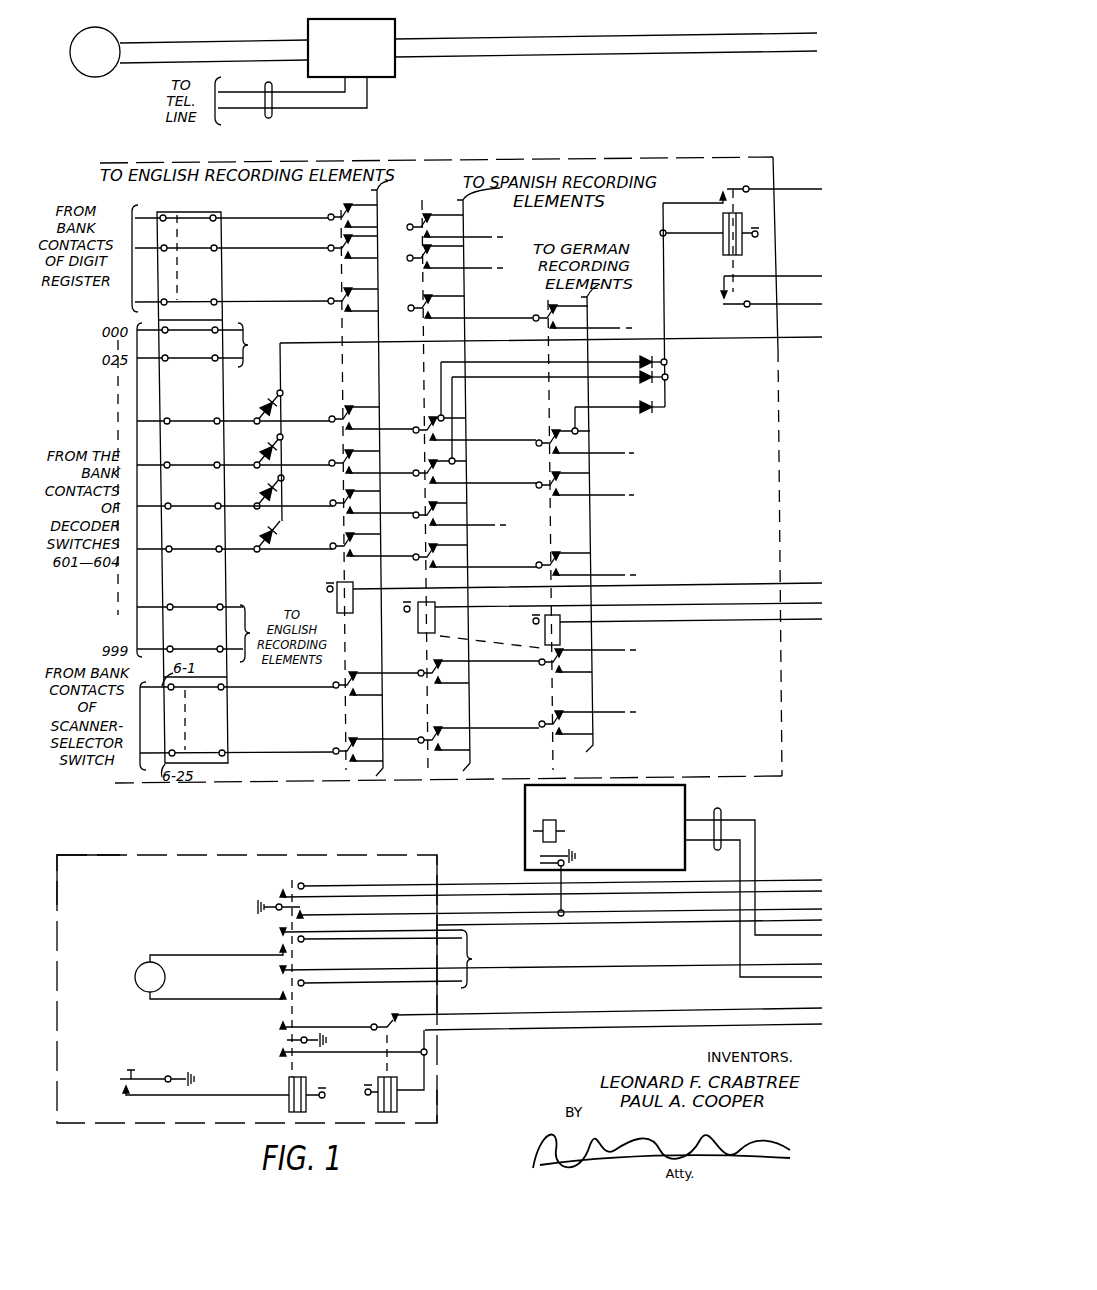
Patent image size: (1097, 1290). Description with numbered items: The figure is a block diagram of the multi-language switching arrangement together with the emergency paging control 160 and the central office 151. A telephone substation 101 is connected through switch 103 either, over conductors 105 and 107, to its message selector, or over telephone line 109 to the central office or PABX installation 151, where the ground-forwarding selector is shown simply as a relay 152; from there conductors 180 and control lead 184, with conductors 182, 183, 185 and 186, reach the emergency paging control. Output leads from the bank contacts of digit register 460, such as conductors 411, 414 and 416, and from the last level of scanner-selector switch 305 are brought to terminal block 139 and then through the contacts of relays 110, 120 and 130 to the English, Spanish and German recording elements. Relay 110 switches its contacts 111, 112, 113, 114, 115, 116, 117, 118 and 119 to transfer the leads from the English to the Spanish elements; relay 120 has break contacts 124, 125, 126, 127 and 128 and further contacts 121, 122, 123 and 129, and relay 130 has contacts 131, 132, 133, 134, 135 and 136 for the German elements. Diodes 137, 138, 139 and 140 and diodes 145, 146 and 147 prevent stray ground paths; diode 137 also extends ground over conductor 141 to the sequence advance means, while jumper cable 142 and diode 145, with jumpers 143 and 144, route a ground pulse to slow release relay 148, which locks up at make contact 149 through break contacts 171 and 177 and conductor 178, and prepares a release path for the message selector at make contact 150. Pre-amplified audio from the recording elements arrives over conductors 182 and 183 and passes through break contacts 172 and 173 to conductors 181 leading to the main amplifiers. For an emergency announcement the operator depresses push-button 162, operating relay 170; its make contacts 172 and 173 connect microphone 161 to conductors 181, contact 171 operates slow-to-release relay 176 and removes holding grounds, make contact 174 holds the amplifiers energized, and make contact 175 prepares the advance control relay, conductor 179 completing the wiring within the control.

The telephone substation 101 is at (77, 74).
The switch 103 is at (397, 70).
The conductor 105 is at (482, 35).
The conductor 107 is at (470, 56).
The telephone line 109 is at (272, 112).
The relay 110 is at (338, 578).
The contact 111 is at (347, 542).
The contact 112 is at (347, 499).
The contact 113 is at (346, 459).
The make contact 114 is at (346, 414).
The break contact 115 is at (345, 297).
The break contact 116 is at (345, 244).
The break contact 117 is at (345, 213).
The break contact 118 is at (350, 681).
The contact 119 is at (350, 747).
The relay 120 is at (418, 634).
The relay contact 121 is at (430, 553).
The relay contact 122 is at (430, 511).
The relay contact 123 is at (430, 469).
The break contact 124 is at (430, 426).
The break contact 125 is at (425, 304).
The break contact 126 is at (424, 254).
The break contact 127 is at (424, 222).
The break contact 128 is at (436, 667).
The relay contact 129 is at (436, 736).
The relay 130 is at (545, 636).
The relay contact 131 is at (553, 561).
The relay contact 132 is at (553, 481).
The relay contact 133 is at (553, 439).
The relay contact 134 is at (550, 314).
The relay contact 135 is at (556, 668).
The relay contact 136 is at (556, 717).
The diode 137 is at (265, 408).
The diode 138 is at (265, 454).
The terminal block 139 is at (185, 212).
The diode 140 is at (265, 539).
The conductor 141 is at (290, 345).
The jumper cable 142 is at (518, 361).
The conductor 143 is at (514, 378).
The conductor 144 is at (578, 392).
The diode 145 is at (638, 358).
The diode 146 is at (638, 379).
The diode 147 is at (640, 411).
The slow release relay 148 is at (723, 246).
The make contact 149 is at (717, 192).
The make contact 150 is at (718, 299).
The central office 151 is at (687, 788).
The relay 152 is at (557, 824).
The emergency paging control 160 is at (390, 880).
The microphone 161 is at (138, 967).
The push-button 162 is at (143, 1080).
The relay 170 is at (289, 1088).
The break-make contact 171 is at (284, 1040).
The contact 172 is at (283, 983).
The contact 173 is at (283, 941).
The make contact 174 is at (306, 911).
The make contact 175 is at (298, 887).
The slow-to-release relay 176 is at (385, 1078).
The break contact 177 is at (390, 1023).
The conductor 178 is at (613, 1011).
The conductor 179 is at (682, 1026).
The conductors 180 is at (722, 810).
The conductors 181 is at (470, 988).
The conductor 182 is at (588, 965).
The conductor 183 is at (699, 923).
The conductor 184 is at (672, 912).
The conductor 185 is at (656, 895).
The conductor 186 is at (733, 880).
The scanner-selector switch 305 is at (110, 733).
The conductor 411 is at (138, 212).
The conductor 414 is at (138, 248).
The conductor 416 is at (138, 300).
The digit register 460 is at (100, 258).